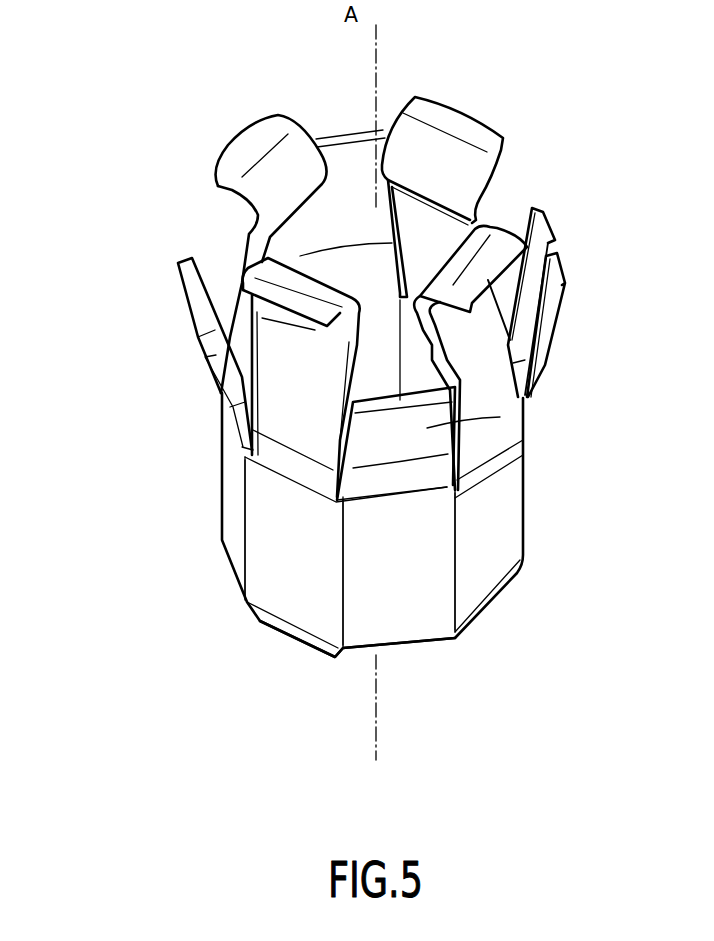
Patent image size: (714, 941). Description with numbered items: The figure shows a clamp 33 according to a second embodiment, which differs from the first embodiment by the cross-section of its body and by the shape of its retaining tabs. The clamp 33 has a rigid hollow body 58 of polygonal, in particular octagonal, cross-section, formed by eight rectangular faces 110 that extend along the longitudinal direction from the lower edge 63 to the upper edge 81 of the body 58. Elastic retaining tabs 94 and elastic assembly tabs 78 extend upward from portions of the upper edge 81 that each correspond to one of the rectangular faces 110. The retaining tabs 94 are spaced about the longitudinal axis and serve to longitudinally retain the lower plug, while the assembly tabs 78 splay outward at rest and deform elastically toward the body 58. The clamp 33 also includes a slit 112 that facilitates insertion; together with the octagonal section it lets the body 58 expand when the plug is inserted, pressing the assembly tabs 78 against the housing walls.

The clamp 33 is at (128, 316).
The hollow body 58 is at (540, 487).
The lower edge 63 is at (420, 643).
The elastic assembly tabs 78 is at (213, 353).
The upper edge 81 is at (277, 475).
The elastic retaining tabs 94 is at (478, 179).
The rectangular faces 110 is at (233, 538).
The slit 112 is at (552, 242).